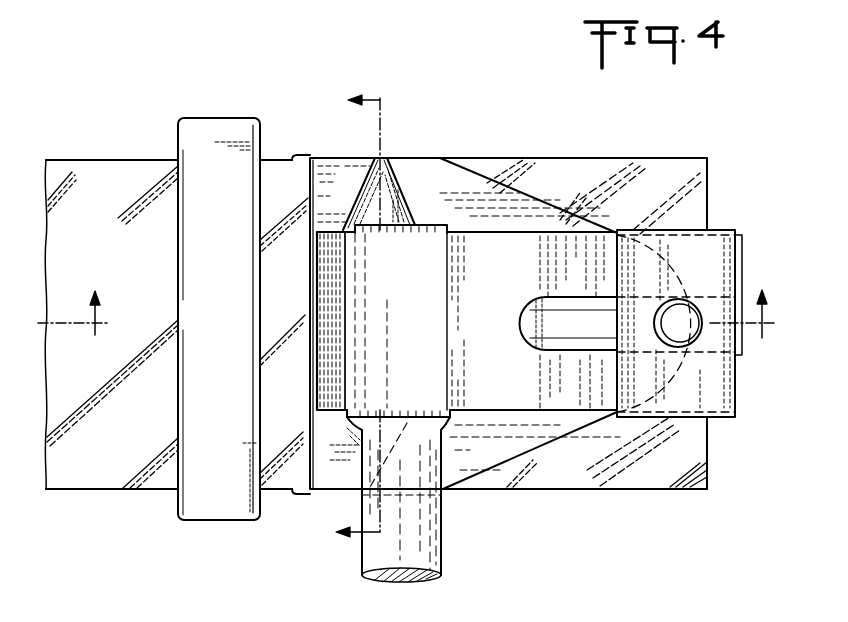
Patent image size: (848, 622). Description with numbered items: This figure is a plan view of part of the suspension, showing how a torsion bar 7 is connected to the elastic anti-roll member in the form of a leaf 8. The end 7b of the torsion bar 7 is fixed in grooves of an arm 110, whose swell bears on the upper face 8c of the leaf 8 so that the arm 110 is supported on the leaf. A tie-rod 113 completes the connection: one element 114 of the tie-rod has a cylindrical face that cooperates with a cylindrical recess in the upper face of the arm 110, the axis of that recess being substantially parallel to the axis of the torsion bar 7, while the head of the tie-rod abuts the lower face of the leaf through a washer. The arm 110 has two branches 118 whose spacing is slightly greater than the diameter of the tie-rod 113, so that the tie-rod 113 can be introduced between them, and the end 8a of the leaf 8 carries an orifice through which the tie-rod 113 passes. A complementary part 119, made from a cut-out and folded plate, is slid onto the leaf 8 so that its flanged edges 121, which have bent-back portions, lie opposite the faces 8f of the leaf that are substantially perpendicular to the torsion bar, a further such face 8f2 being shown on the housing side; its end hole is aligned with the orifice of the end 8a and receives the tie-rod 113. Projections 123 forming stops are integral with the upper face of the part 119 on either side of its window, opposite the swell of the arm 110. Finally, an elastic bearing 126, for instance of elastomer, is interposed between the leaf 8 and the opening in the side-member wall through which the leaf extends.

The torsion bar 7 is at (418, 545).
The end of the torsion bar 7b is at (427, 226).
The elastic anti-roll leaf 8 is at (97, 501).
The end of the leaf 8a is at (694, 465).
The upper face of the leaf 8c is at (96, 165).
The faces of the leaf 8f is at (660, 491).
The top face of housing 8f2 is at (676, 151).
The arm 110 is at (467, 321).
The tie-rod 113 is at (683, 322).
The element of the tie-rod 114 is at (717, 398).
The branches of the arm 118 is at (584, 285).
The complementary part 119 is at (488, 172).
The flanged edges 121 is at (305, 155).
The projections 123 is at (350, 236).
The elastic bearing 126 is at (212, 135).